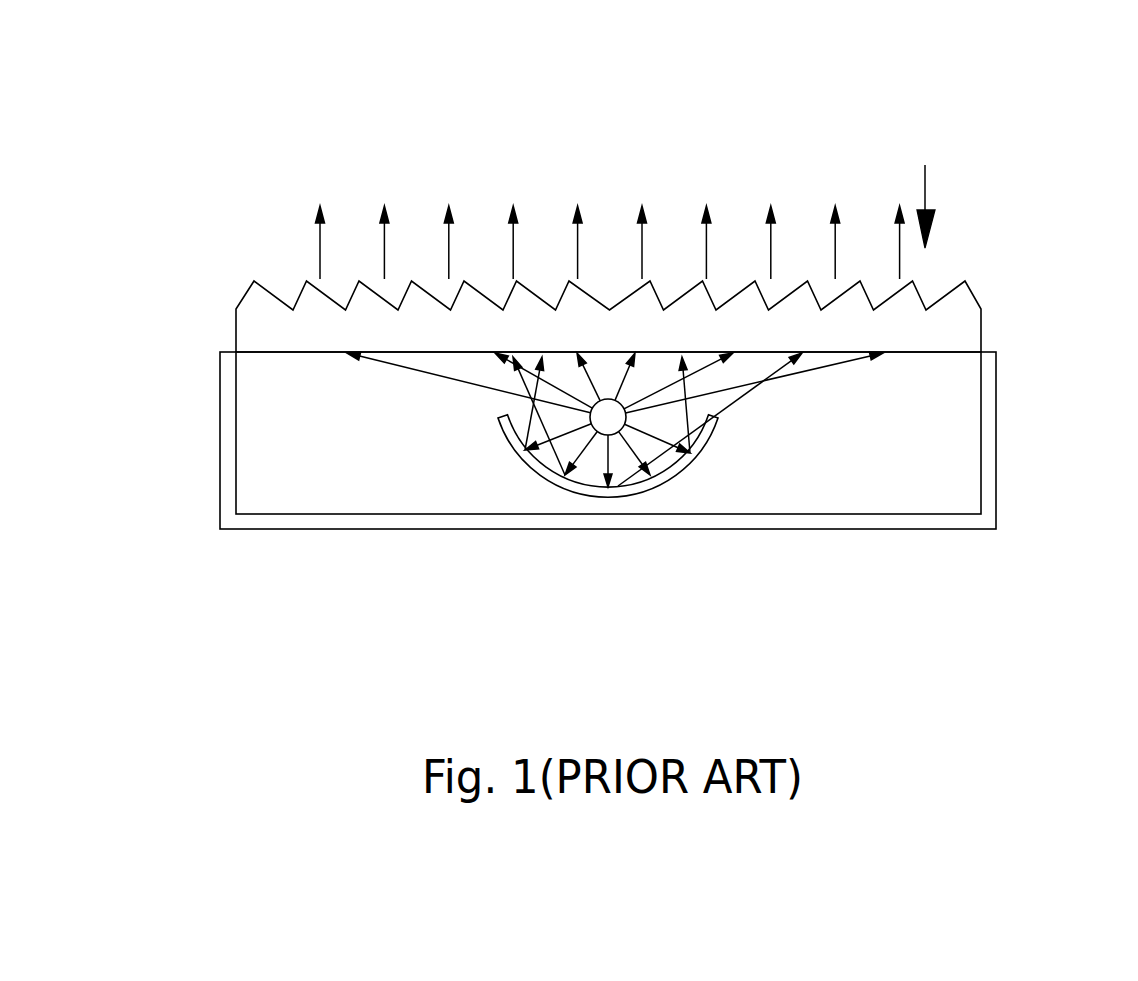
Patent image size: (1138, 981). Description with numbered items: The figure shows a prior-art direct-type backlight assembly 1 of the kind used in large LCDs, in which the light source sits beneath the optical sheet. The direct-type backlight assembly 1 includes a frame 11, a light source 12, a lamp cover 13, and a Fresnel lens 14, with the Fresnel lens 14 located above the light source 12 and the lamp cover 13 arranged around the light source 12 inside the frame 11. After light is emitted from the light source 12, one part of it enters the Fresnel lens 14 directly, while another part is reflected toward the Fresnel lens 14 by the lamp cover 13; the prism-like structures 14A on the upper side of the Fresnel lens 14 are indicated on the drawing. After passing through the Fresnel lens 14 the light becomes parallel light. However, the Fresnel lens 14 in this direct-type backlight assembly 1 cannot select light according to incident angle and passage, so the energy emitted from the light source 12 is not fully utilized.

The direct-type backlight assembly 1 is at (1107, 657).
The frame 11 is at (987, 450).
The light source 12 is at (618, 419).
The lamp cover 13 is at (698, 520).
The Fresnel lens 14 is at (955, 333).
The prism structures 14A is at (925, 165).